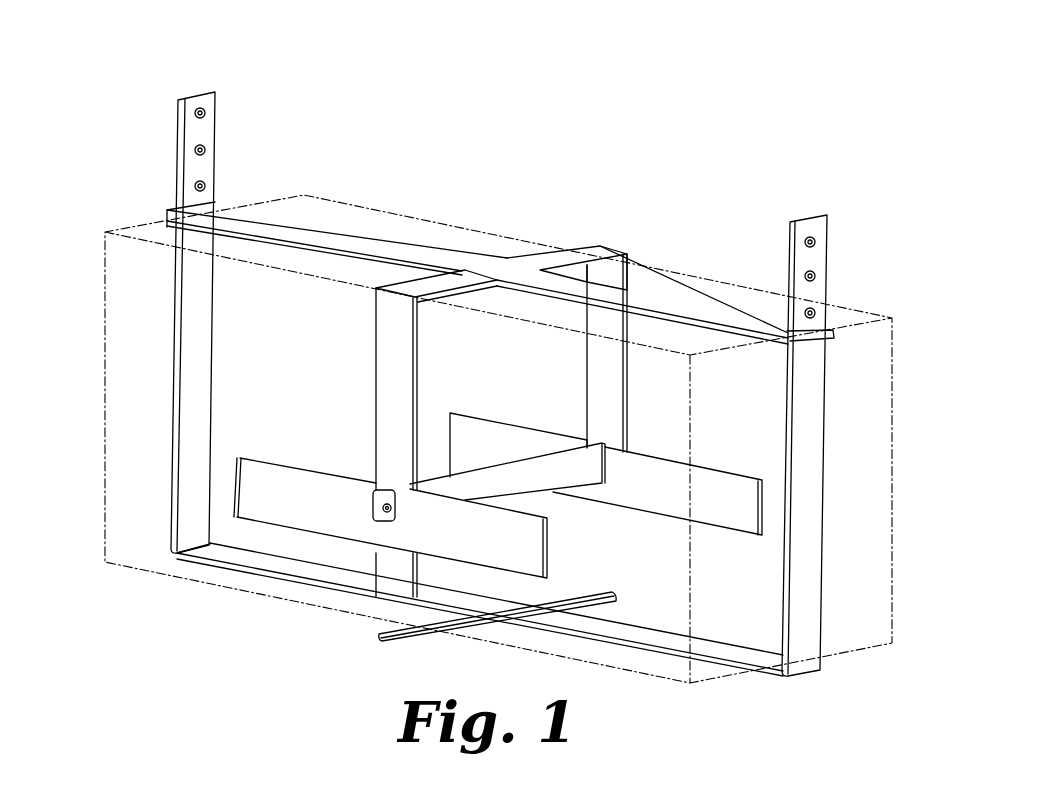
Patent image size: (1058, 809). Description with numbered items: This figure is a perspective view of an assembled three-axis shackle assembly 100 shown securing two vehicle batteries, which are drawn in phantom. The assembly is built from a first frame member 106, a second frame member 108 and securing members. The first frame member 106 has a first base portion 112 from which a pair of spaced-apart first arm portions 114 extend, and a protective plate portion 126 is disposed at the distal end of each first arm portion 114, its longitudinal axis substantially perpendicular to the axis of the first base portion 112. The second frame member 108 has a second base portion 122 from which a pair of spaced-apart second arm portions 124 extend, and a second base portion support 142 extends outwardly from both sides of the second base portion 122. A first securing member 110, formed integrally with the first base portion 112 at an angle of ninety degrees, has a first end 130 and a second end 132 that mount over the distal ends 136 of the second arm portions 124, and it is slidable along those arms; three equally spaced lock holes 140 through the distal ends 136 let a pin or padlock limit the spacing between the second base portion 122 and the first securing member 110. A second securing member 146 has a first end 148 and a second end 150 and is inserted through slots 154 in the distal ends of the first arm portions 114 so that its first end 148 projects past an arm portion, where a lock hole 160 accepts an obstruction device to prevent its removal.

The three-axis shackle assembly 100 is at (668, 152).
The first frame member 106 is at (596, 238).
The second frame member 108 is at (480, 657).
The first securing member 110 is at (718, 305).
The first base portion 112 is at (550, 262).
The first arm portions 114 is at (385, 342).
The second base portion 122 is at (642, 642).
The second arm portions 124 is at (197, 427).
The protective plate portion 126 is at (258, 493).
The first end 130 is at (830, 346).
The second end 132 is at (218, 206).
The distal ends 136 is at (536, 354).
The lock hole 140 is at (205, 152).
The second base portion support 142 is at (418, 637).
The second securing member 146 is at (440, 476).
The first end 148 is at (373, 516).
The second end 150 is at (560, 468).
The slots 154 is at (470, 521).
The lock hole 160 is at (392, 522).